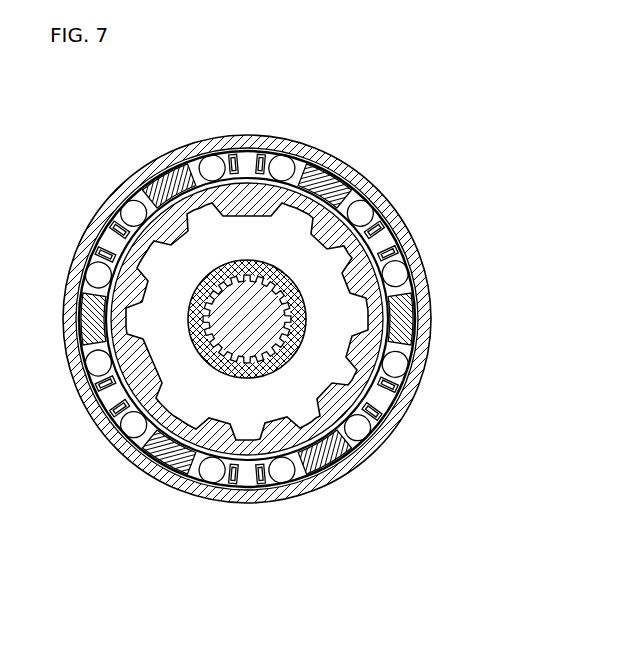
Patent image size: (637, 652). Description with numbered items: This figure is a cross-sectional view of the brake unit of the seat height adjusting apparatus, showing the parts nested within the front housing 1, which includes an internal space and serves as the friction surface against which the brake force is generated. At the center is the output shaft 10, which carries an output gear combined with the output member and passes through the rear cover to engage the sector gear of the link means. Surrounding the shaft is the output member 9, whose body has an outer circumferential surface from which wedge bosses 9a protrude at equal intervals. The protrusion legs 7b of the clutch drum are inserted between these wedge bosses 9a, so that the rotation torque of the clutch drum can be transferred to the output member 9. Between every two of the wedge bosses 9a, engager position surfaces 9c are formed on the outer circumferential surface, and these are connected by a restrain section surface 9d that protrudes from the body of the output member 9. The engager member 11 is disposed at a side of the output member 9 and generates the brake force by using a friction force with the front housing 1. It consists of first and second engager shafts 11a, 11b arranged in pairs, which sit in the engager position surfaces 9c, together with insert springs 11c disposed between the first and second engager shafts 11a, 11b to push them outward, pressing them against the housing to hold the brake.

The front housing 1 is at (251, 496).
The protrusion legs 7b is at (352, 430).
The output member 9 is at (247, 328).
The wedge bosses 9a is at (227, 485).
The engager position surfaces 9c is at (390, 237).
The restrain section surface 9d is at (342, 192).
The output shaft 10 is at (242, 337).
The engager member 11 is at (427, 412).
The first engager shaft 11a is at (397, 372).
The second engager shaft 11b is at (383, 428).
The insert springs 11c is at (405, 402).